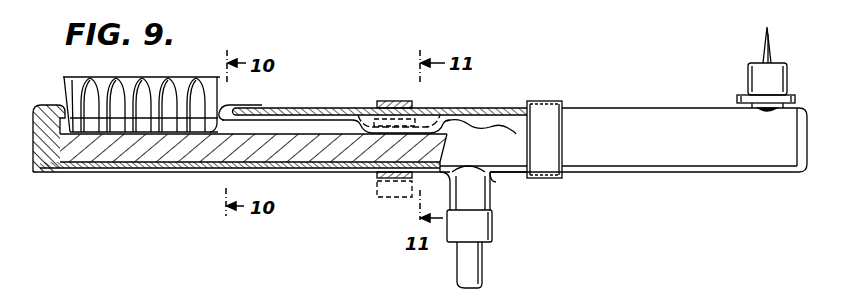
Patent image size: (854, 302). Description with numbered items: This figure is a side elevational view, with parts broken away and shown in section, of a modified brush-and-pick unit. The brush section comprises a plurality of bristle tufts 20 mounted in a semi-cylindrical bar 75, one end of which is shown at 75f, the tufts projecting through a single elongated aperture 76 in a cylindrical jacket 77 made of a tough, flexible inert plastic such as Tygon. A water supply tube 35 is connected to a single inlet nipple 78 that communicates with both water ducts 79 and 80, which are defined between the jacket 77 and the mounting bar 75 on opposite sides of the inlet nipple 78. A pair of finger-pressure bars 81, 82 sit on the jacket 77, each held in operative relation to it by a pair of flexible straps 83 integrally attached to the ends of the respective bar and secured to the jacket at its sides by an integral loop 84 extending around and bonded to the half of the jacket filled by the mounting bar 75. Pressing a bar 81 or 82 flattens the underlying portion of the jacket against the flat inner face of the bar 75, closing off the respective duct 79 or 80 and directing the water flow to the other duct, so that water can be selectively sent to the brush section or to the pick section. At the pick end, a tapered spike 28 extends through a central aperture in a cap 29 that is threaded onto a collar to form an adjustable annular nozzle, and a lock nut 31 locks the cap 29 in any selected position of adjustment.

The bristle tufts 20 is at (180, 73).
The tapered spike 28 is at (762, 42).
The cap 29 is at (748, 78).
The lock nut 31 is at (737, 101).
The water supply tube 35 is at (482, 262).
The semi-cylindrical bar 75 is at (117, 154).
The plate end cap 75f is at (40, 150).
The elongated aperture 76 is at (263, 106).
The cylindrical jacket 77 is at (654, 108).
The inlet nipple 78 is at (488, 192).
The water duct 79 is at (320, 121).
The water duct 80 is at (504, 125).
The finger-pressure bar 81 is at (403, 101).
The finger-pressure bar 82 is at (535, 101).
The flexible straps 83 is at (553, 125).
The integral loop 84 is at (387, 183).